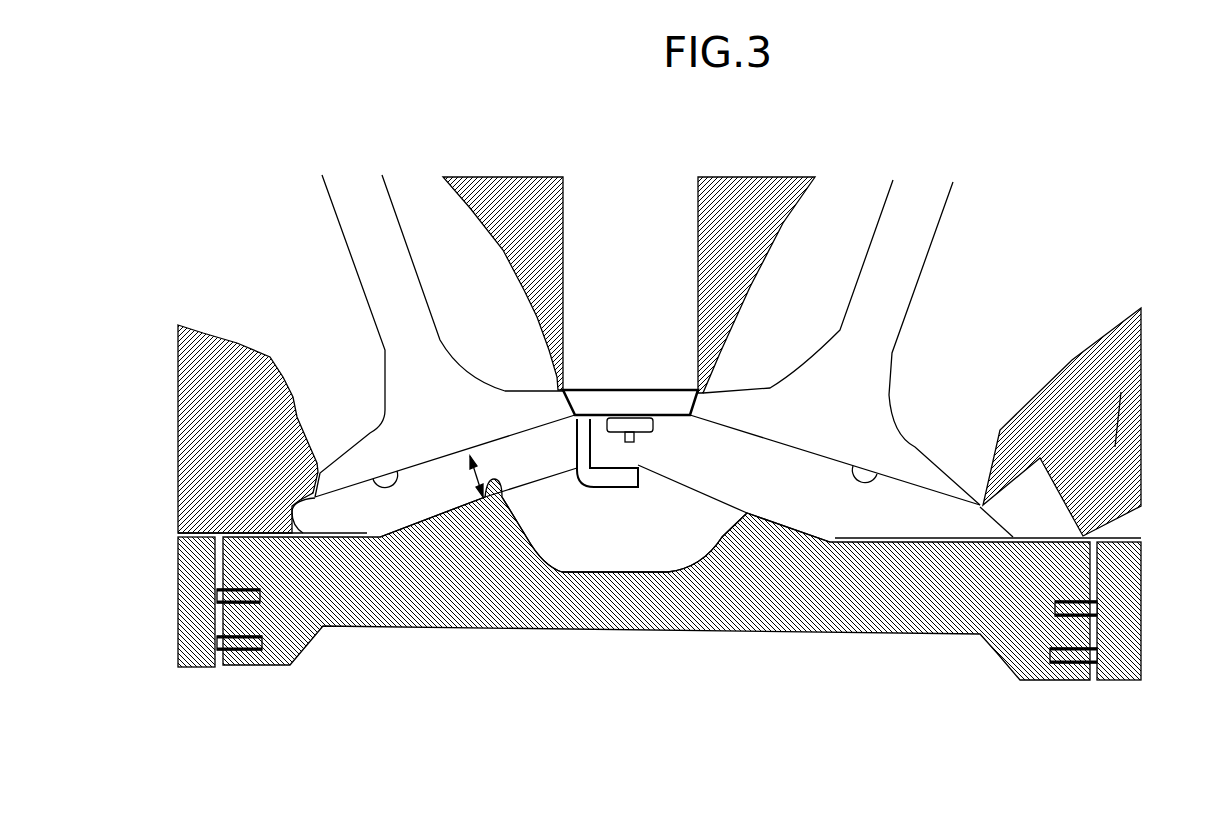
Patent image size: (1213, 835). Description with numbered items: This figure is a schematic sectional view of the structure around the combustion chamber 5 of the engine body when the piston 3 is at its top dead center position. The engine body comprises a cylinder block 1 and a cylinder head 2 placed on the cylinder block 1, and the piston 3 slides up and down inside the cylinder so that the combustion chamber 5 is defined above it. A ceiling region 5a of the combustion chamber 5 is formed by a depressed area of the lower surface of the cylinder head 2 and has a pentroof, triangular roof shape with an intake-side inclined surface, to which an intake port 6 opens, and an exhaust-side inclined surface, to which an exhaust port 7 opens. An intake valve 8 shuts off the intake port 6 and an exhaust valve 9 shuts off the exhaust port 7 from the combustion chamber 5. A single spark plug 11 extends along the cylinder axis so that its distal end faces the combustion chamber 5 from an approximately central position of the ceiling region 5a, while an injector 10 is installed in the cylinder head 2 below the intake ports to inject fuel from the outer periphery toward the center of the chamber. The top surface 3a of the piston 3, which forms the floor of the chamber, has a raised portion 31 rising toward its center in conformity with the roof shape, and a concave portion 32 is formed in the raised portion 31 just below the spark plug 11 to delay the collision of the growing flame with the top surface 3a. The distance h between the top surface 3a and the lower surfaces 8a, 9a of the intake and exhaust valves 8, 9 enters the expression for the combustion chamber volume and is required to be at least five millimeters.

The cylinder block 1 is at (185, 668).
The cylinder head 2 is at (220, 331).
The piston 3 is at (290, 666).
The top surface of the piston 3a is at (855, 548).
The combustion chamber 5 is at (446, 501).
The ceiling region of the combustion chamber 5a is at (290, 527).
The intake port 6 is at (1023, 218).
The exhaust port 7 is at (273, 198).
The intake valve 8 is at (910, 278).
The lower surface of the intake valve 8a is at (877, 480).
The exhaust valve 9 is at (352, 232).
The lower surface of the exhaust valve 9a is at (372, 481).
The injector 10 is at (1127, 397).
The spark plug 11 is at (685, 215).
The raised portion 31 is at (767, 517).
The concave portion 32 is at (645, 543).
The distance between piston top surface and valve lower surfaces h is at (483, 497).